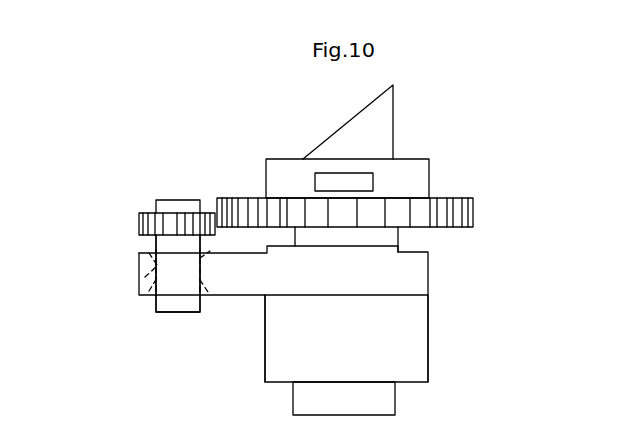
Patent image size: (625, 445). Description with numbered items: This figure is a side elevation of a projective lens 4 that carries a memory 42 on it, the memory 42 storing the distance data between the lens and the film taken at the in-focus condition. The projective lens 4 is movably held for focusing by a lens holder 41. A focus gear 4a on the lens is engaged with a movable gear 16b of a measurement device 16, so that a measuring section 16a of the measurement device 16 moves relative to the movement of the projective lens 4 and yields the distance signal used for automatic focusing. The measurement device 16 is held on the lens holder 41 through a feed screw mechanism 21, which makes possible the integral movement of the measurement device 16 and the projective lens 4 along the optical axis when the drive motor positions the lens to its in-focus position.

The projective lens 4 is at (392, 240).
The focus gear 4a is at (450, 212).
The lens holder 41 is at (418, 357).
The memory 42 is at (372, 181).
The measurement device 16 is at (140, 245).
The measuring section 16a is at (172, 313).
The movable gear 16b is at (140, 224).
The feed screw mechanism 21 is at (145, 277).